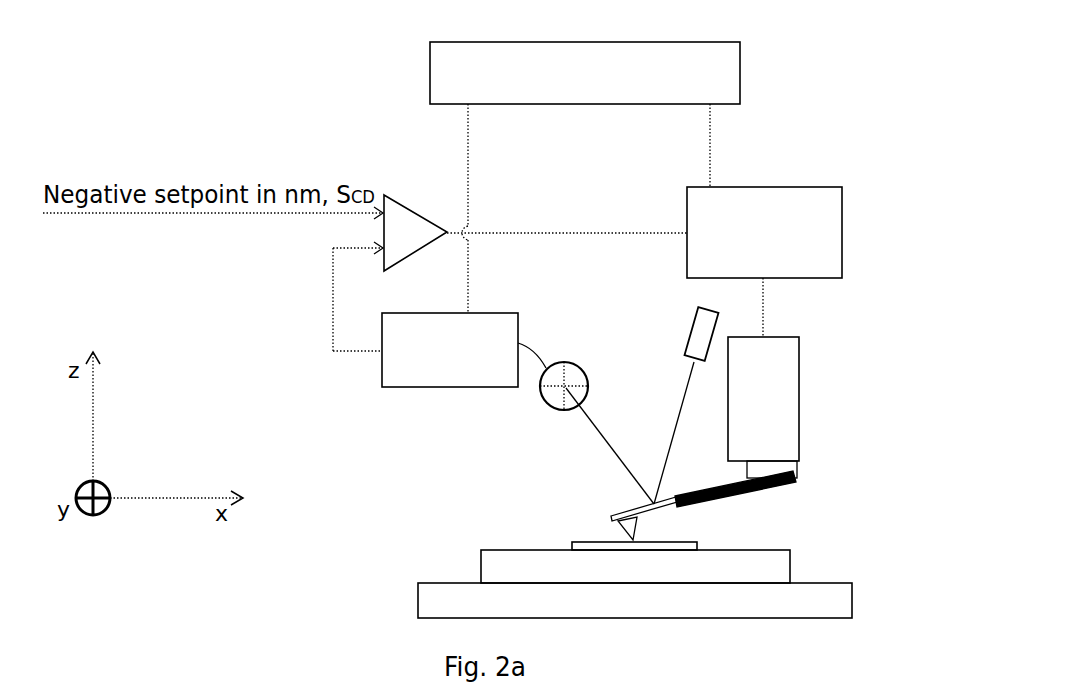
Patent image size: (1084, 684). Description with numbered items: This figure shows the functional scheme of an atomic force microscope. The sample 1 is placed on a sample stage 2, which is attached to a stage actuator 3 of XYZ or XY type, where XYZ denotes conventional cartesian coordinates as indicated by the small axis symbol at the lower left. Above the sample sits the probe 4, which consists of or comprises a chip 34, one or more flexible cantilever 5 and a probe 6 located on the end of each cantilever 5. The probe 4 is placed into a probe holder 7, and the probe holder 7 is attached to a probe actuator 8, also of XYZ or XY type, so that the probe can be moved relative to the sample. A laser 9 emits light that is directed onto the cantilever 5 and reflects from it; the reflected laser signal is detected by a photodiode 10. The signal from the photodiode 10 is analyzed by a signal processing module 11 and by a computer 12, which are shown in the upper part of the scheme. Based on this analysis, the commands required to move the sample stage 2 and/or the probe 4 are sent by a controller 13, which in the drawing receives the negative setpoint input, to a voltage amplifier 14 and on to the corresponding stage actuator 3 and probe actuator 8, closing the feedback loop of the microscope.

The sample 1 is at (570, 545).
The sample stage 2 is at (481, 565).
The stage actuator 3 is at (418, 600).
The probe 4 is at (762, 514).
The flexible cantilever 5 is at (652, 521).
The probe 6 is at (638, 522).
The probe holder 7 is at (799, 467).
The probe actuator 8 is at (799, 402).
The laser 9 is at (697, 322).
The photodiode 10 is at (539, 395).
The signal processing module 11 is at (382, 380).
The computer 12 is at (740, 72).
The controller 13 is at (403, 203).
The voltage amplifier 14 is at (842, 237).
The chip 34 is at (794, 484).